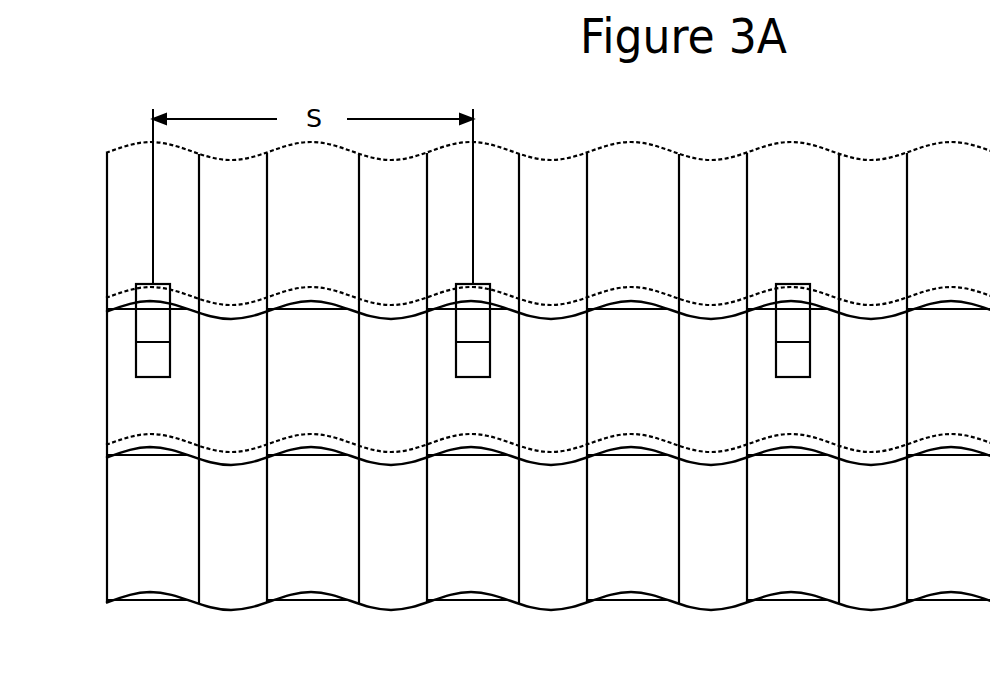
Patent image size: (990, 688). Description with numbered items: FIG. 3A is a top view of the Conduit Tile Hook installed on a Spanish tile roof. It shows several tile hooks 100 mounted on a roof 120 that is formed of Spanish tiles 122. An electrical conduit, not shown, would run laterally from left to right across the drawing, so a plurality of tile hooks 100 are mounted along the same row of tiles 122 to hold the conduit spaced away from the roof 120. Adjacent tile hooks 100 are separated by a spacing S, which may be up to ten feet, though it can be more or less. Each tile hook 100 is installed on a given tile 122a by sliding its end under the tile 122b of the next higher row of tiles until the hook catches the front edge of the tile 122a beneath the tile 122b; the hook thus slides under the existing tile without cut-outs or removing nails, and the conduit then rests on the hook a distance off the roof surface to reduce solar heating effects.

The tile hook 100 is at (462, 377).
The roof 120 is at (951, 141).
The Spanish tiles 122 is at (793, 595).
The tile 122a is at (818, 420).
The tile of the next higher row 122b is at (818, 257).